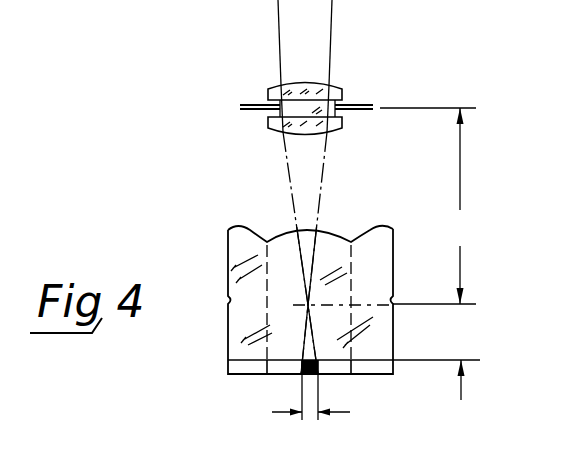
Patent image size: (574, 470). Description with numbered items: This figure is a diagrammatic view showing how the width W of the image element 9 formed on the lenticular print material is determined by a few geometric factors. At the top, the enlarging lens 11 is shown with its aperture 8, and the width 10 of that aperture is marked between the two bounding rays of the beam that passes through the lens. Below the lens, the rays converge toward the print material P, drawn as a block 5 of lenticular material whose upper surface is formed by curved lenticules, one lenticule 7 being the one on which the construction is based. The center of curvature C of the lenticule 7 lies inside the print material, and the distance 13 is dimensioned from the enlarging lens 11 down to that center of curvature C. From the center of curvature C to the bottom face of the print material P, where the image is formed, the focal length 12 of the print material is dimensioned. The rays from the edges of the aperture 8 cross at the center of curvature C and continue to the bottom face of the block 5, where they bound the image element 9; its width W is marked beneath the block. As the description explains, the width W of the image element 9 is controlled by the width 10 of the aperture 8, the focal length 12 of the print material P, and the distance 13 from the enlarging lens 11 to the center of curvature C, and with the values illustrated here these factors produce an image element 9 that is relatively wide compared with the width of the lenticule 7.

The width of the aperture 10 is at (358, 25).
The aperture 8 is at (317, 112).
The enlarging lens 11 is at (278, 122).
The crystal block 5 is at (283, 241).
The print material P is at (240, 272).
The center of curvature C is at (308, 305).
The distance from the enlarging lens to the center of curvature 13 is at (428, 206).
The focal length 12 is at (436, 359).
The image element 9 is at (300, 377).
The lenticule 7 is at (328, 354).
The width of the image element W is at (308, 418).